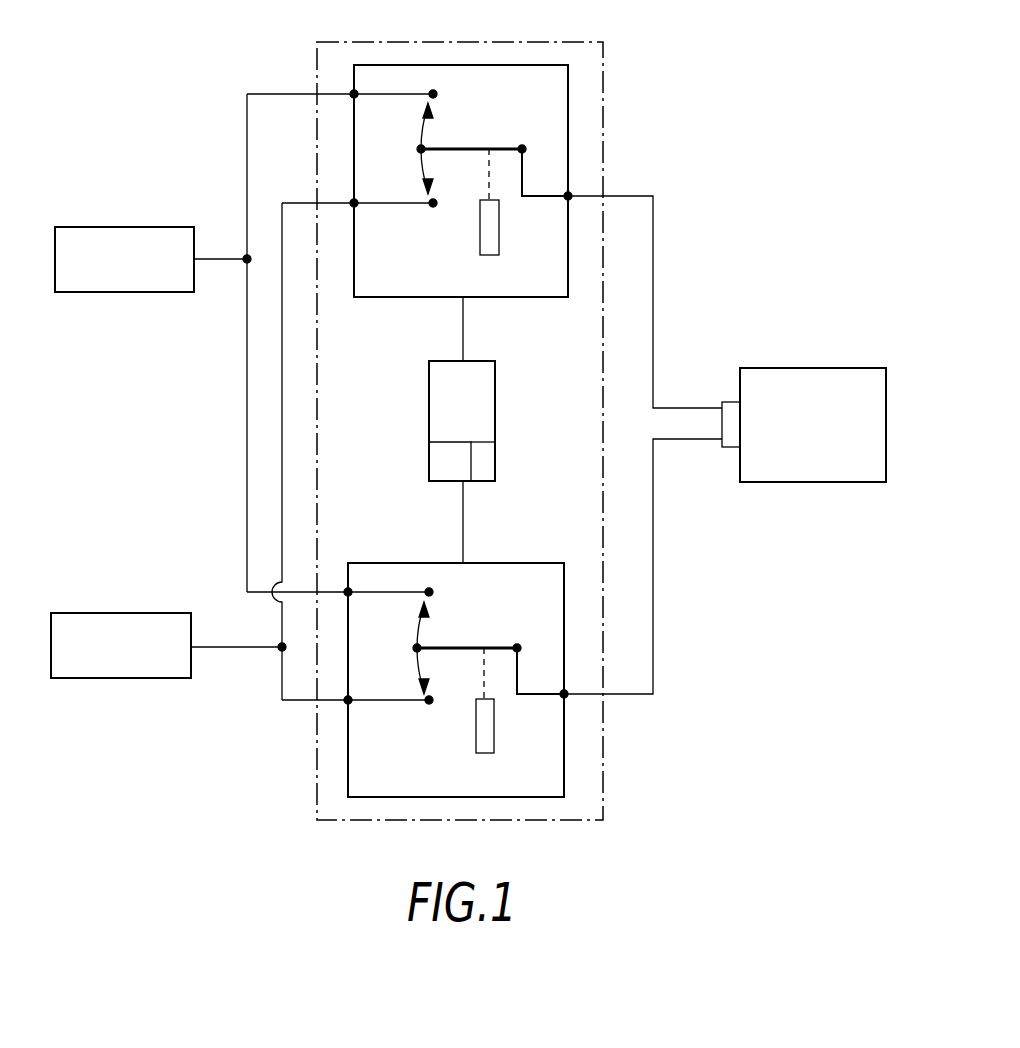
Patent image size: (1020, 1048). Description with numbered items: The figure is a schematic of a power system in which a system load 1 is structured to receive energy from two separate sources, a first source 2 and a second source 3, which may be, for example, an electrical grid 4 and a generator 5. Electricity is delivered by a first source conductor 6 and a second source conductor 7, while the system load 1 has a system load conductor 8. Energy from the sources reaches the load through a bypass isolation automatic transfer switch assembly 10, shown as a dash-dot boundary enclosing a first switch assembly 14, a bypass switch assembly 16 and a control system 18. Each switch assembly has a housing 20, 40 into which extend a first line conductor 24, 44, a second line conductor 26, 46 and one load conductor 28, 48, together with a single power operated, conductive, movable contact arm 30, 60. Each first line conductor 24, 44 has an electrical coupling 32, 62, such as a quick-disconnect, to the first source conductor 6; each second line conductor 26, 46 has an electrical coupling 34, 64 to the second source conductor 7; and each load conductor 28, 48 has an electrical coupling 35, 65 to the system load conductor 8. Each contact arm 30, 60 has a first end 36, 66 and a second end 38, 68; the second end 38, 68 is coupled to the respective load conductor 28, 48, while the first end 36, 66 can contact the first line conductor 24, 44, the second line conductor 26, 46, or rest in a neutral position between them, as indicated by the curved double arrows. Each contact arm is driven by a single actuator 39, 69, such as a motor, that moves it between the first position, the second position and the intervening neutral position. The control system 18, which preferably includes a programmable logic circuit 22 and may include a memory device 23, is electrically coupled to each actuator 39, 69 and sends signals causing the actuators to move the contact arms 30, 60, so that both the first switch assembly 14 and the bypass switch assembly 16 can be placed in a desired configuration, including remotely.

The system load 1 is at (887, 390).
The first source 2 is at (110, 228).
The second source 3 is at (65, 613).
The electrical grid 4 is at (163, 230).
The generator 5 is at (157, 612).
The first source conductor 6 is at (220, 258).
The second source conductor 7 is at (238, 650).
The system load conductor 8 is at (655, 282).
The bypass isolation automatic transfer switch assembly 10 is at (658, 92).
The first switch assembly 14 is at (373, 72).
The bypass switch assembly 16 is at (377, 570).
The control system 18 is at (476, 405).
The housing 20 is at (568, 85).
The programmable logic circuit 22 is at (488, 457).
The memory device 23 is at (440, 462).
The first line conductor 24 is at (407, 96).
The second line conductor 26 is at (400, 205).
The load conductor 28 is at (547, 193).
The movable contact arm 30 is at (448, 146).
The electrical coupling 32 is at (353, 95).
The electrical coupling 34 is at (353, 204).
The electrical coupling 35 is at (569, 195).
The contact arm first end 36 is at (420, 150).
The contact arm second end 38 is at (520, 147).
The actuator 39 is at (499, 224).
The housing 40 is at (507, 562).
The first line conductor 44 is at (395, 592).
The second line conductor 46 is at (405, 702).
The load conductor 48 is at (536, 693).
The movable contact arm 60 is at (446, 646).
The electrical coupling 62 is at (347, 591).
The electrical coupling 64 is at (349, 699).
The electrical coupling 65 is at (565, 695).
The contact arm first end 66 is at (416, 648).
The contact arm second end 68 is at (517, 645).
The actuator 69 is at (494, 713).